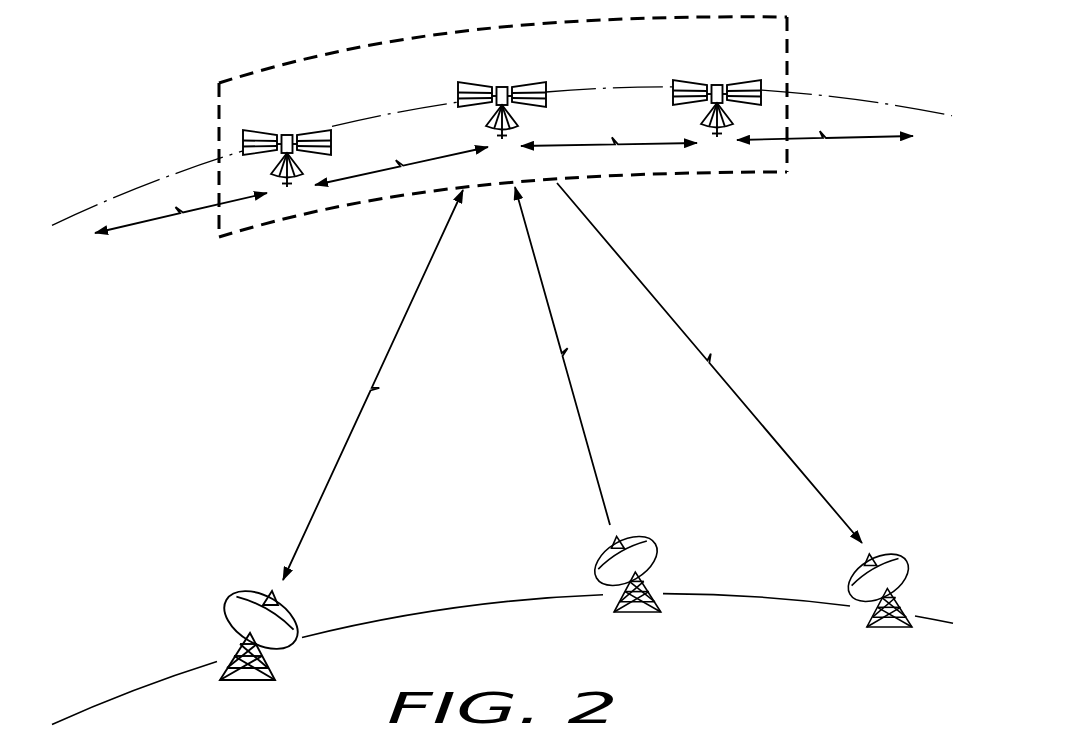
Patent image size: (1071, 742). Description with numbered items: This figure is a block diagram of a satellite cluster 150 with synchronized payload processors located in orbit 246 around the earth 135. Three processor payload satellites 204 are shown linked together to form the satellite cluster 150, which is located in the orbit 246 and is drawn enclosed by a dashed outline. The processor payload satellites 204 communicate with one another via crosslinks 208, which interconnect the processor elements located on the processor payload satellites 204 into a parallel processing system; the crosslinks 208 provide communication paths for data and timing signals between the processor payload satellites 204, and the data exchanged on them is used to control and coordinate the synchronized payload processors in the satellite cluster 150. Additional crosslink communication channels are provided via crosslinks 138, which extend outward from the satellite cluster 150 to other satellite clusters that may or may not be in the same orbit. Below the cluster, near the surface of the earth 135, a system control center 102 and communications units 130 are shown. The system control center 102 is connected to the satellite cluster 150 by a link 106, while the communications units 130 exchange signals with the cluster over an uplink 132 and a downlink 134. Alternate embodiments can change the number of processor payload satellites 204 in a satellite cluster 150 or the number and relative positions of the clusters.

The system control center 102 is at (228, 601).
The link 106 is at (330, 479).
The communications units 130 is at (657, 543).
The uplink 132 is at (586, 432).
The downlink 134 is at (780, 446).
The earth 135 is at (458, 606).
The crosslinks 138 is at (140, 224).
The satellite cluster 150 is at (327, 52).
The processor payload satellites 204 is at (255, 131).
The crosslinks 208 is at (398, 167).
The orbit 246 is at (117, 195).